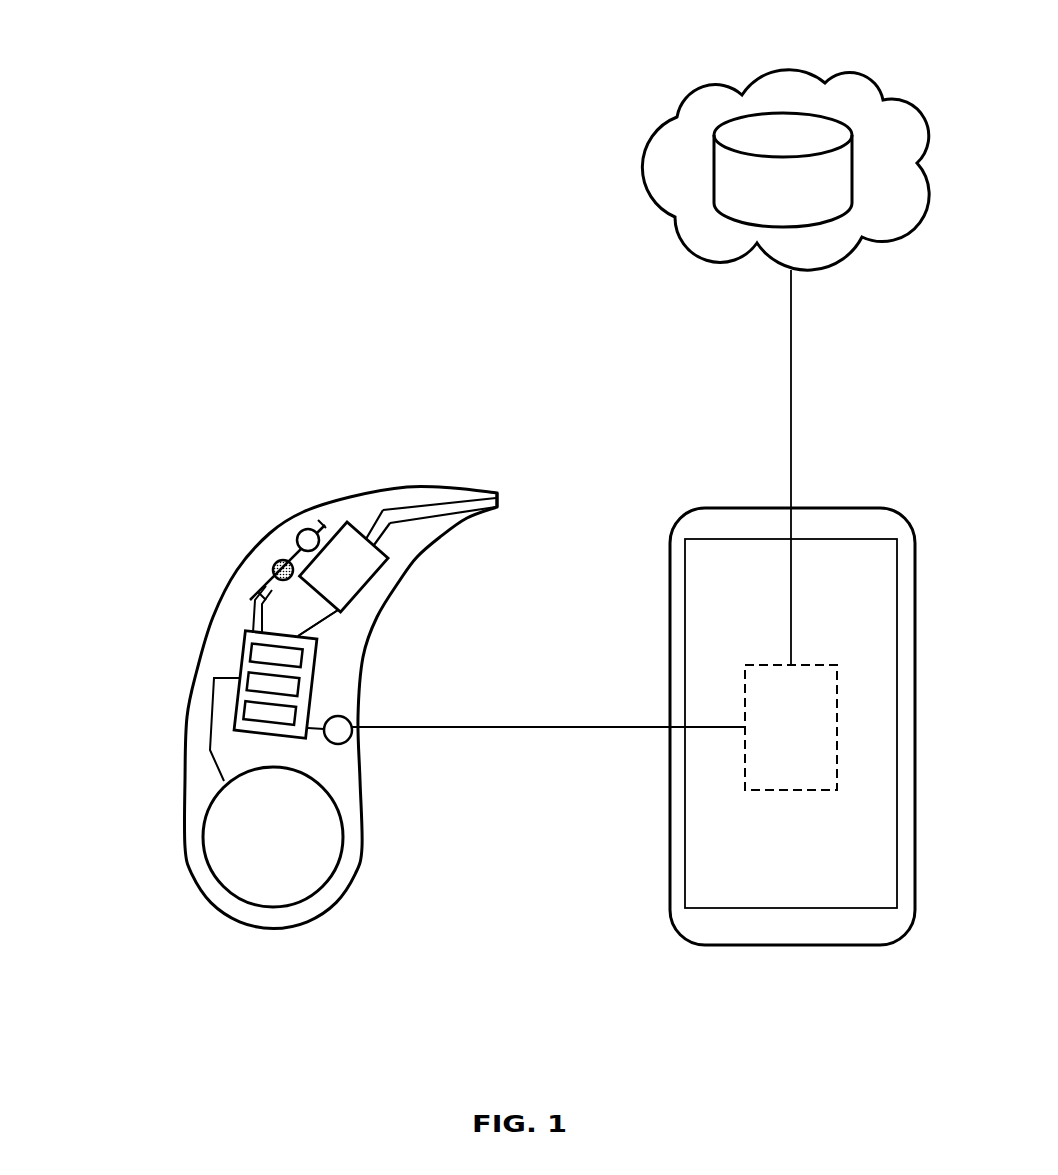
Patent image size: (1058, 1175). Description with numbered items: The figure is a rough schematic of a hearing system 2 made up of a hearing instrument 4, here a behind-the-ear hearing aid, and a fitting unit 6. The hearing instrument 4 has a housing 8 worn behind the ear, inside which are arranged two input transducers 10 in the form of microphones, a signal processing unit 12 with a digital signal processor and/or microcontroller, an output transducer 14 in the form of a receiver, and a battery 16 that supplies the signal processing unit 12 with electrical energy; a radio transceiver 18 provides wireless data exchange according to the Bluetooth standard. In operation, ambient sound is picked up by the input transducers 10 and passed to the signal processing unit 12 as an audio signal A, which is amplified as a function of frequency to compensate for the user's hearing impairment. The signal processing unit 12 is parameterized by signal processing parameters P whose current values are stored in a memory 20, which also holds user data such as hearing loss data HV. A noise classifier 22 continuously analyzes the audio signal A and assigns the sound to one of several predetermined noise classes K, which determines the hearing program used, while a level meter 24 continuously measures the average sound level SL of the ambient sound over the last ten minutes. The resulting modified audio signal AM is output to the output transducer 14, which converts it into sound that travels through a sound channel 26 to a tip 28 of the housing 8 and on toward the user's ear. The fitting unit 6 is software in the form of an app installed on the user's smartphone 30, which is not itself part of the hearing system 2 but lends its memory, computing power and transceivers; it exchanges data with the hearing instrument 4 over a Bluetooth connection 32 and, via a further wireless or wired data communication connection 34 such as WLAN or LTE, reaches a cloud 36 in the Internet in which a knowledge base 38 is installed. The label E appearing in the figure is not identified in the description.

The hearing system 2 is at (283, 428).
The hearing instrument 4 is at (340, 739).
The fitting unit 6 is at (838, 721).
The housing 8 is at (209, 907).
The input transducers 10 is at (295, 521).
The signal processing unit 12 is at (318, 660).
The output transducer 14 is at (363, 590).
The battery 16 is at (277, 907).
The radio transceiver 18 is at (352, 737).
The memory 20 is at (173, 657).
The noise classifier 22 is at (354, 687).
The level meter 24 is at (186, 717).
The sound channel 26 is at (442, 508).
The tip 28 is at (506, 502).
The smartphone 30 is at (790, 946).
The Bluetooth connection 32 is at (596, 735).
The data communication connection 34 is at (790, 372).
The cloud 36 is at (644, 176).
The knowledge base 38 is at (788, 138).
The audio signal A is at (258, 605).
The modified audio signal AM is at (307, 618).
The input device E is at (221, 776).
The signal processing parameters P is at (173, 657).
The hearing loss data HV is at (244, 648).
The noise classes K is at (300, 692).
The average sound level SL is at (237, 709).